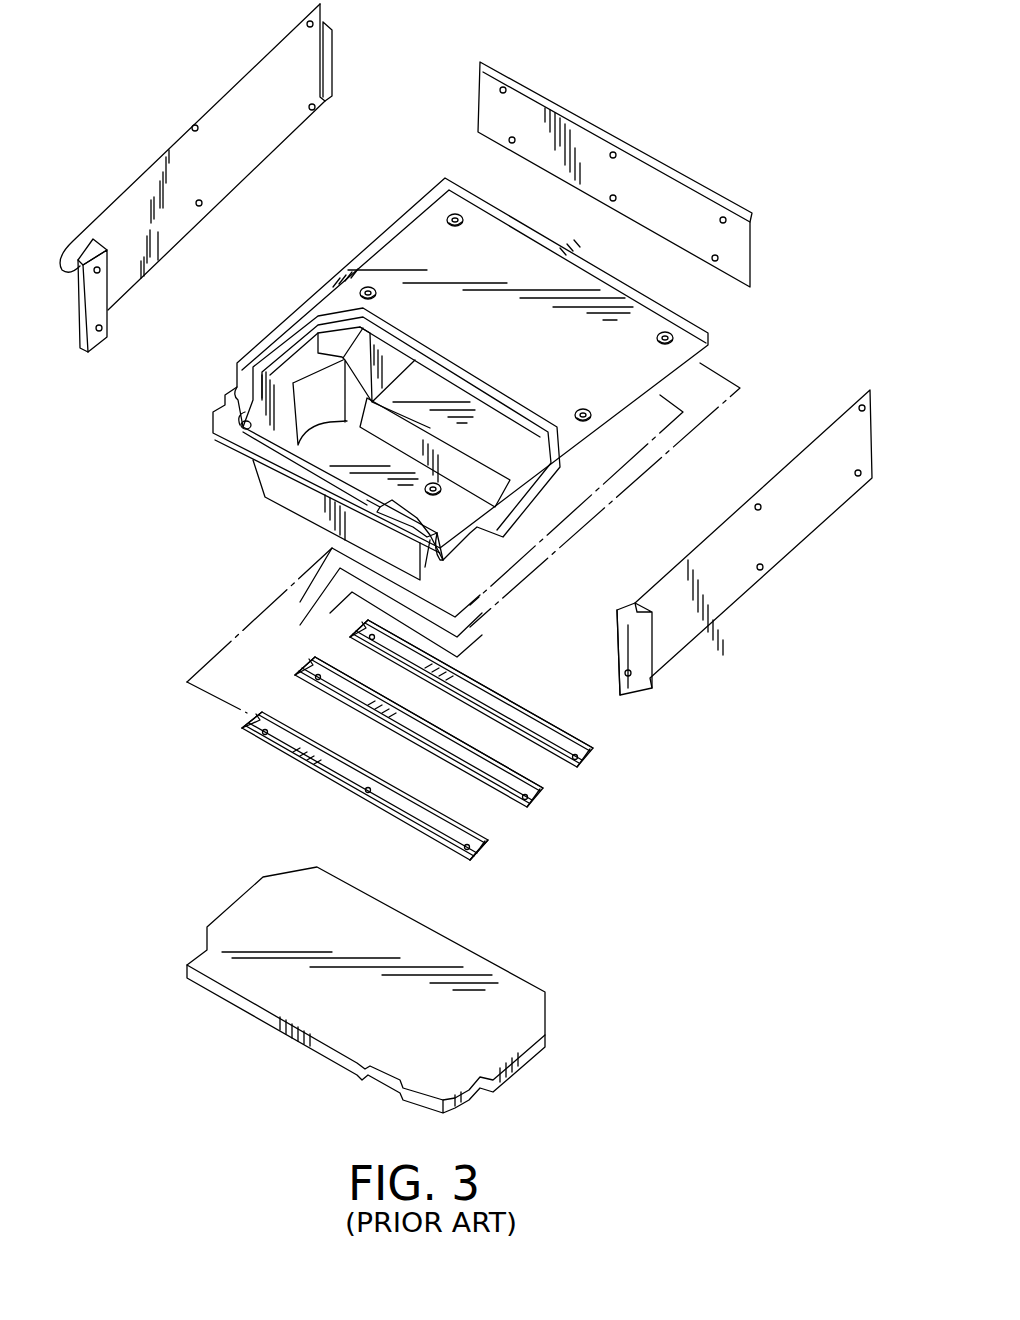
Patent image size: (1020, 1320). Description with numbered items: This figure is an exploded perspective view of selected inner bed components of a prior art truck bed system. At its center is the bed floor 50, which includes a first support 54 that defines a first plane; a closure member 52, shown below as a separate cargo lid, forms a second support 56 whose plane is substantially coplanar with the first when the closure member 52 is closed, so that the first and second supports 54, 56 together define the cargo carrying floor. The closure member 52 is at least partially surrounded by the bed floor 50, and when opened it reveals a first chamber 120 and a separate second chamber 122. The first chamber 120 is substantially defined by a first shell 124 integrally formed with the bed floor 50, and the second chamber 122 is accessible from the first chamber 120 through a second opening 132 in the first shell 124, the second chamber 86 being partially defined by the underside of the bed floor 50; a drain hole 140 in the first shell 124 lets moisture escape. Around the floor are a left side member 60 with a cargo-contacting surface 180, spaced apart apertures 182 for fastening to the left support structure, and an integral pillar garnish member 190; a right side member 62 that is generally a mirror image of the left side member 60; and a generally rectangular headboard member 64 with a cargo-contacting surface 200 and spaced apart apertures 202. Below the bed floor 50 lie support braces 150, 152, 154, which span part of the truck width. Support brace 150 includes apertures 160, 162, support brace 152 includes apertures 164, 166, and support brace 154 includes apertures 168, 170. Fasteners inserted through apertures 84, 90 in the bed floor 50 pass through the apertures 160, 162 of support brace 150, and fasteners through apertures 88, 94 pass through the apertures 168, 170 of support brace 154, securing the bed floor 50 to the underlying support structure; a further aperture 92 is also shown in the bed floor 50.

The bed floor 50 is at (456, 420).
The closure member 52 is at (387, 990).
The first support 54 is at (560, 343).
The second support 56 is at (390, 1022).
The left side member 60 is at (196, 219).
The right side member 62 is at (744, 603).
The headboard member 64 is at (622, 174).
The aperture 84 is at (459, 226).
The second chamber 86 is at (379, 295).
The aperture 88 is at (255, 430).
The aperture 90 is at (659, 344).
The grommet 92 is at (582, 409).
The aperture 94 is at (449, 548).
The first chamber 120 is at (383, 444).
The second chamber 122 is at (440, 395).
The first shell 124 is at (308, 512).
The second opening 132 is at (347, 415).
The drain hole 140 is at (439, 486).
The support brace 150 is at (487, 704).
The support brace 152 is at (434, 764).
The support brace 154 is at (381, 813).
The aperture 160 is at (597, 746).
The aperture 162 is at (366, 637).
The aperture 164 is at (546, 789).
The aperture 166 is at (317, 678).
The aperture 168 is at (462, 850).
The aperture 170 is at (263, 731).
The surface 180 is at (238, 147).
The apertures 182 is at (196, 125).
The pillar garnish member 190 is at (100, 352).
The surface 200 is at (647, 200).
The apertures 202 is at (613, 152).